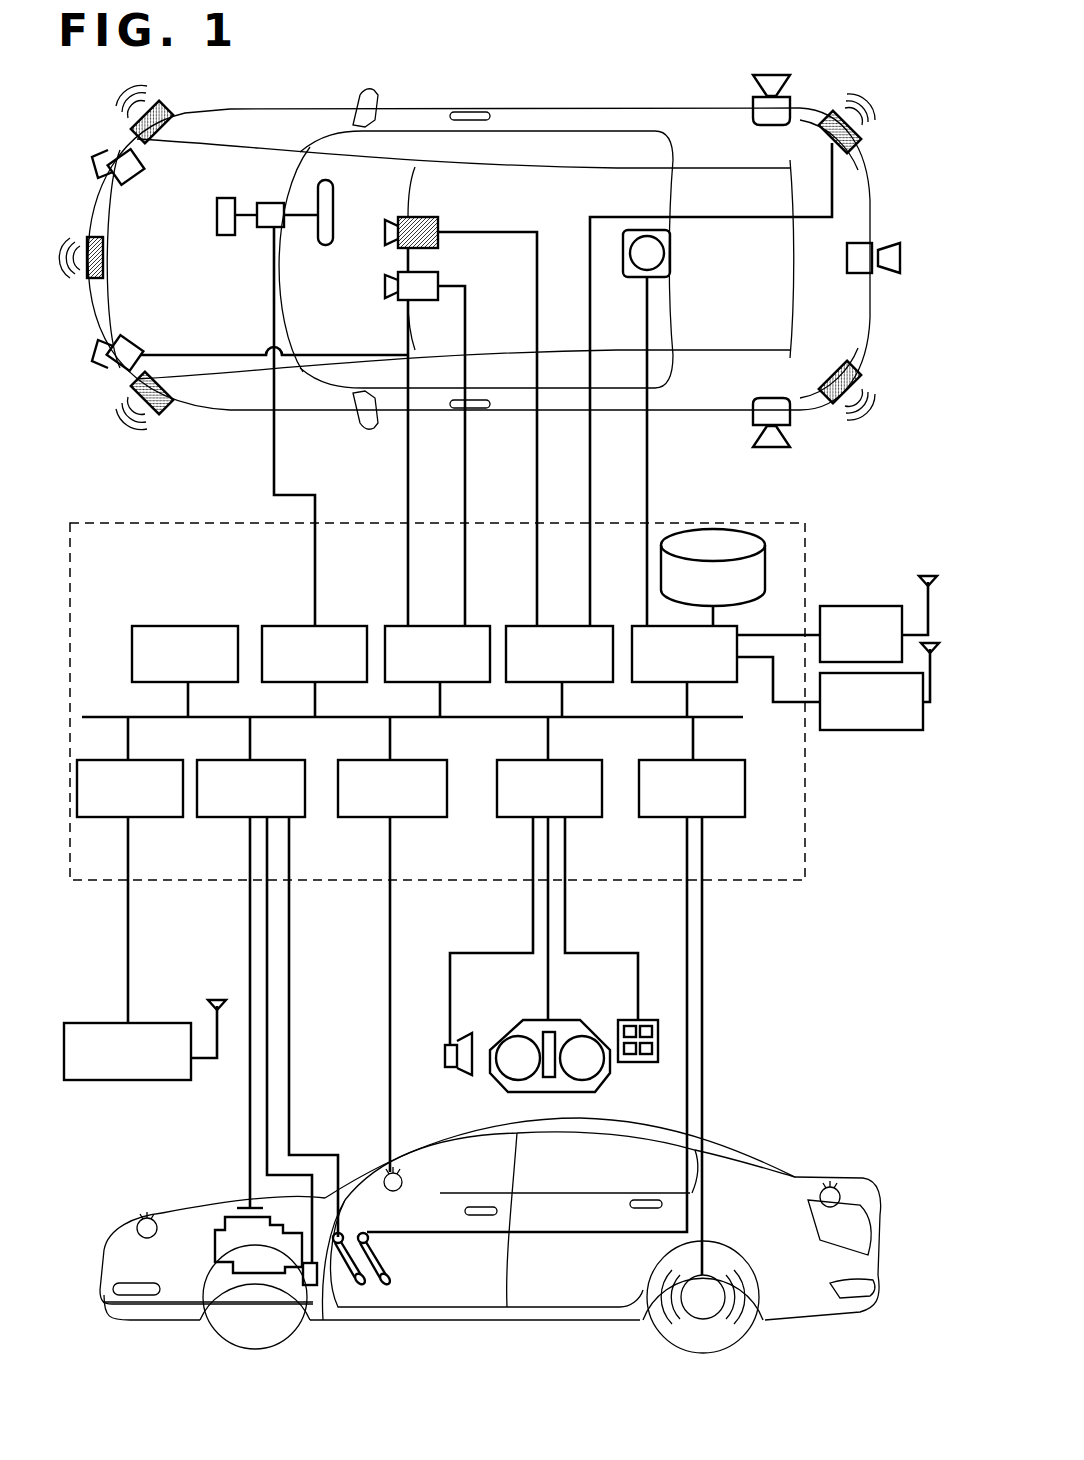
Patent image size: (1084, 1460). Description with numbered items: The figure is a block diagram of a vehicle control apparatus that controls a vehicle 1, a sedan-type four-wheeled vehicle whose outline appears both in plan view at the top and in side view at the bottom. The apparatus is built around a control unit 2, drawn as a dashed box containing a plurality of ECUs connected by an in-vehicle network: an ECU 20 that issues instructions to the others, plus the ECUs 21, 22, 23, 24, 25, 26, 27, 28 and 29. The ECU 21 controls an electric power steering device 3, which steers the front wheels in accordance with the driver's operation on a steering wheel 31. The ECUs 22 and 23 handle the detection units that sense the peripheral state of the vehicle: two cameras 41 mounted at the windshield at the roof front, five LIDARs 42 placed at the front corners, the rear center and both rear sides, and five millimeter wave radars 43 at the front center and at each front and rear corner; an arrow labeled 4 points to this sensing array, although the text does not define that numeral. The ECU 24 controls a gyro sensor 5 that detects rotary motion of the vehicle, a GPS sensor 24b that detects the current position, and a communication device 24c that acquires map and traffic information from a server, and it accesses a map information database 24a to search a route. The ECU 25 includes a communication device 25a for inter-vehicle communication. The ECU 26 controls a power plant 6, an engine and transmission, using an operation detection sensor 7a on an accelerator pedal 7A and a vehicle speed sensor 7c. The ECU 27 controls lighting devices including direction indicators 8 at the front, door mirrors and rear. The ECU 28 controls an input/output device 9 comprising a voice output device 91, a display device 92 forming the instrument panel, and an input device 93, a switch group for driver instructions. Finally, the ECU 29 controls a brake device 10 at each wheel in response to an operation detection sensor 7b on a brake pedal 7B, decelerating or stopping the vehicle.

The vehicle 1 is at (880, 167).
The control unit 2 is at (773, 882).
The electric power steering device 3 is at (226, 237).
The external sensor group 4 is at (118, 110).
The gyro sensor 5 is at (672, 253).
The power plant 6 is at (226, 1215).
The operation detection sensor 7a is at (340, 1232).
The operation detection sensor 7b is at (367, 1238).
The accelerator pedal 7A is at (372, 1280).
The brake pedal 7B is at (392, 1262).
The vehicle speed sensor 7c is at (310, 1287).
The direction indicators 8 is at (140, 1225).
The input/output device 9 is at (480, 1093).
The brake device 10 is at (703, 1322).
The ECU 20 is at (218, 626).
The ECU 21 is at (345, 626).
The ECU 22 is at (435, 626).
The ECU 23 is at (561, 626).
The ECU 24 is at (628, 626).
The map information database 24a is at (713, 530).
The GPS sensor 24b is at (876, 606).
The communication device 24c is at (872, 731).
The ECU 25 is at (160, 818).
The communication device 25a is at (128, 1081).
The ECU 26 is at (221, 818).
The ECU 27 is at (421, 818).
The ECU 28 is at (588, 818).
The ECU 29 is at (726, 818).
The steering wheel 31 is at (326, 247).
The camera 41 is at (440, 245).
The LIDAR 42 is at (138, 188).
The millimeter wave radar 43 is at (170, 108).
The voice output device 91 is at (445, 1048).
The display device 92 is at (504, 1035).
The input device 93 is at (645, 1062).